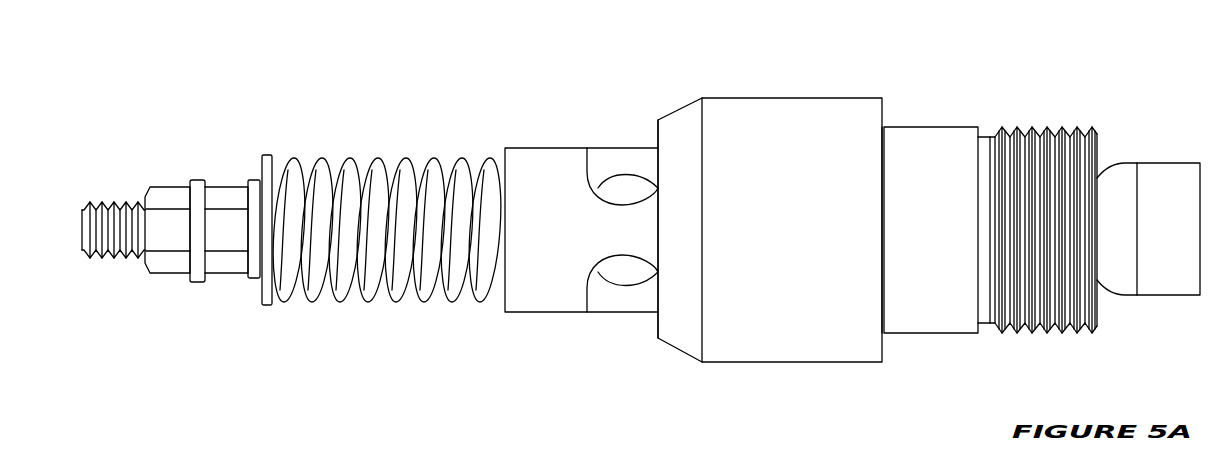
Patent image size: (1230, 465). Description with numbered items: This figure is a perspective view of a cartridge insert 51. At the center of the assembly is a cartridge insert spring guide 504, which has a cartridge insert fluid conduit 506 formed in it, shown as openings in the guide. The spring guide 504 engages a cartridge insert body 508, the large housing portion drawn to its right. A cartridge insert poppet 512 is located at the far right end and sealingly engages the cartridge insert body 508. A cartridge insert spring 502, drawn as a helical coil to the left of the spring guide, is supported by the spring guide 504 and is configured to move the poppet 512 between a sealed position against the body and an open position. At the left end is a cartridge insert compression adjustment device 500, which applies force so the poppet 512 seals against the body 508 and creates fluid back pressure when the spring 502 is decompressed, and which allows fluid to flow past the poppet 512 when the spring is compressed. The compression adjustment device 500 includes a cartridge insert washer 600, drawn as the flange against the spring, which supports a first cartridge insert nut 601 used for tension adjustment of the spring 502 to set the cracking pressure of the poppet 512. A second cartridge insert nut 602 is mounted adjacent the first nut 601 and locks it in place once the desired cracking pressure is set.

The cartridge insert 51 is at (95, 53).
The cartridge insert compression adjustment device 500 is at (176, 152).
The cartridge insert spring 502 is at (408, 158).
The cartridge insert spring guide 504 is at (546, 148).
The cartridge insert fluid conduit 506 is at (623, 150).
The cartridge insert body 508 is at (786, 98).
The cartridge insert poppet 512 is at (1172, 163).
The cartridge insert washer 600 is at (268, 305).
The first cartridge insert nut 601 is at (233, 273).
The second cartridge insert nut 602 is at (178, 273).